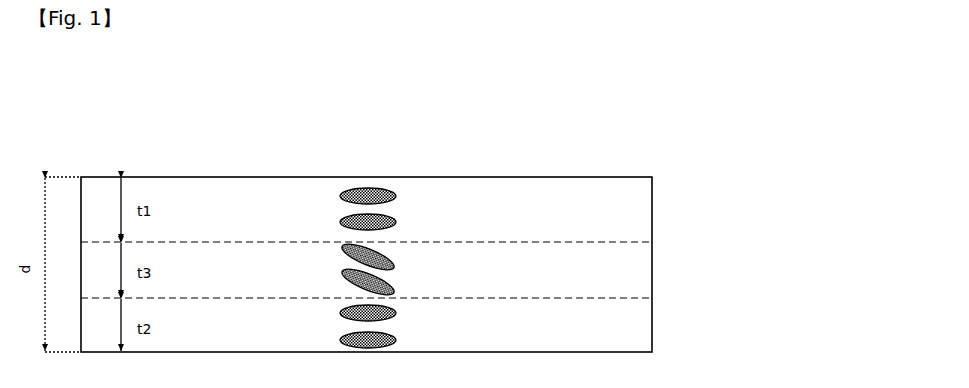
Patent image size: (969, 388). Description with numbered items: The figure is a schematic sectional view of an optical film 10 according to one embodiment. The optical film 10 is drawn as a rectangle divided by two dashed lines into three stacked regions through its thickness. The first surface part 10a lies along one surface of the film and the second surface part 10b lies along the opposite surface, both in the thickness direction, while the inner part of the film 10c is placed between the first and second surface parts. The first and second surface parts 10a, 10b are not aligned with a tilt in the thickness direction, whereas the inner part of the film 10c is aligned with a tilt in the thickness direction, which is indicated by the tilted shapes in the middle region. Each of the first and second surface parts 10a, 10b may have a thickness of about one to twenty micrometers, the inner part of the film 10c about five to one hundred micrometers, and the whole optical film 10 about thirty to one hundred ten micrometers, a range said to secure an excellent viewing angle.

The optical film 10 is at (694, 103).
The first surface part 10a is at (652, 212).
The second surface part 10b is at (652, 323).
The inner part of the film 10c is at (652, 267).